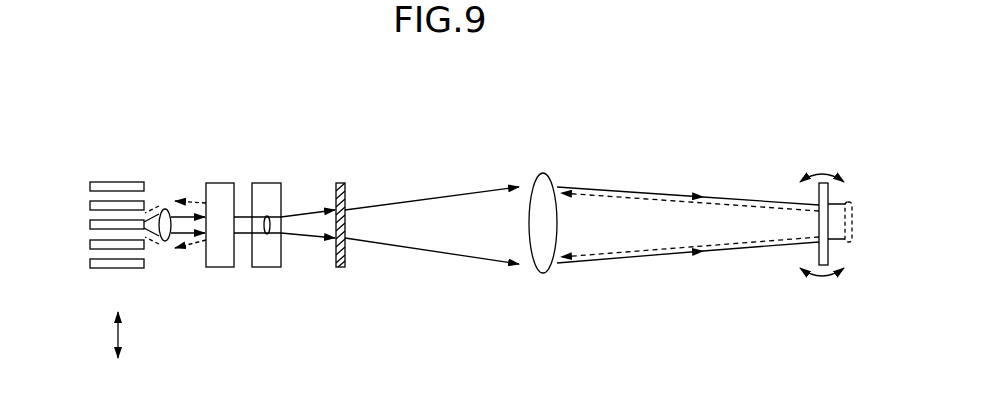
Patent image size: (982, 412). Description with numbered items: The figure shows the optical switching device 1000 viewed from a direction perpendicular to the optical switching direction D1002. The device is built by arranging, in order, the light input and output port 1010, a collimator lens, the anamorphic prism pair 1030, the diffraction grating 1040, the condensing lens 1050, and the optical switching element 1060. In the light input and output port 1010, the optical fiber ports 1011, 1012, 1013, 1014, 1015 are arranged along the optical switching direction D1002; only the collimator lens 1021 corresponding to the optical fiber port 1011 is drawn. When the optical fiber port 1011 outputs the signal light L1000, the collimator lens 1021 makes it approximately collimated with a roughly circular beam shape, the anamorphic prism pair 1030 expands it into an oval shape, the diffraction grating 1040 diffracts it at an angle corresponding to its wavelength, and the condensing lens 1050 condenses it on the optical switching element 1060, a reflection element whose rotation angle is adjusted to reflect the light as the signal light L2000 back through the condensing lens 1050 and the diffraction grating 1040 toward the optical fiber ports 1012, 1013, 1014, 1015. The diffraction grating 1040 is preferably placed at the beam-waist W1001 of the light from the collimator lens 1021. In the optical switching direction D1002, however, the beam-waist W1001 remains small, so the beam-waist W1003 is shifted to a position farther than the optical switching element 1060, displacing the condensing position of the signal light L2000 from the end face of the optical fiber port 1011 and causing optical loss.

The optical switching device 1000 is at (767, 143).
The light input and output port 1010 is at (85, 201).
The optical fiber port 1011 is at (89, 224).
The optical fiber port 1012 is at (89, 184).
The optical fiber port 1013 is at (89, 204).
The optical fiber port 1014 is at (89, 246).
The optical fiber port 1015 is at (89, 265).
The collimator lens 1021 is at (164, 208).
The anamorphic prism pair 1030 is at (249, 160).
The beam-waist W1001 is at (268, 236).
The diffraction grating 1040 is at (341, 183).
The condensing lens 1050 is at (581, 175).
The optical switching element 1060 is at (829, 196).
The signal light L1000 is at (678, 198).
The signal light L2000 is at (193, 250).
The beam-waist W1003 is at (852, 246).
The optical switching direction D1002 is at (119, 336).